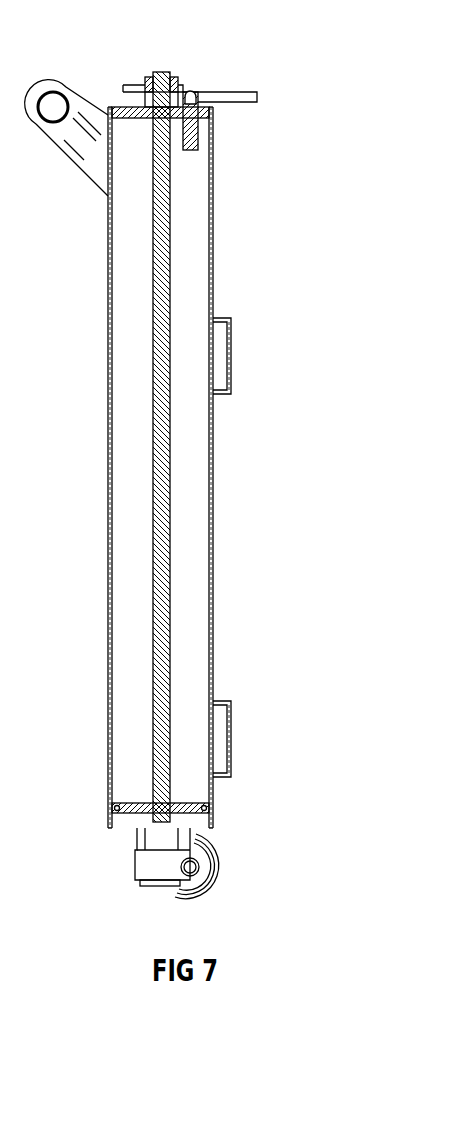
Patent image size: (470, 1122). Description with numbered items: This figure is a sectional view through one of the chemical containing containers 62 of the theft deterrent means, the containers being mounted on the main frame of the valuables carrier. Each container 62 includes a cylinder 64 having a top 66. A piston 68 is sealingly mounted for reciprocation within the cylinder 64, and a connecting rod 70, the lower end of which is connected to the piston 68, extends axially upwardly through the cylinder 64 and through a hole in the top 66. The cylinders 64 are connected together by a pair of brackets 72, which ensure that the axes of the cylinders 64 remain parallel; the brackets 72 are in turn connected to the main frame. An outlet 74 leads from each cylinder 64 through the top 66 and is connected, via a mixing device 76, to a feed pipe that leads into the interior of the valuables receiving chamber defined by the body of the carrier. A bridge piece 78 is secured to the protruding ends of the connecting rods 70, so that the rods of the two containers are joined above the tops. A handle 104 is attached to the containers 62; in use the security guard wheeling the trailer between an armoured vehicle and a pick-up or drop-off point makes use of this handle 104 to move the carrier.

The chemical containing container 62 is at (259, 90).
The cylinder 64 is at (213, 224).
The top 66 is at (117, 110).
The piston 68 is at (192, 807).
The connecting rod 70 is at (160, 523).
The bracket 72 is at (229, 350).
The outlet 74 is at (193, 133).
The mixing device 76 is at (190, 93).
The bridge piece 78 is at (146, 80).
The handle 104 is at (48, 93).